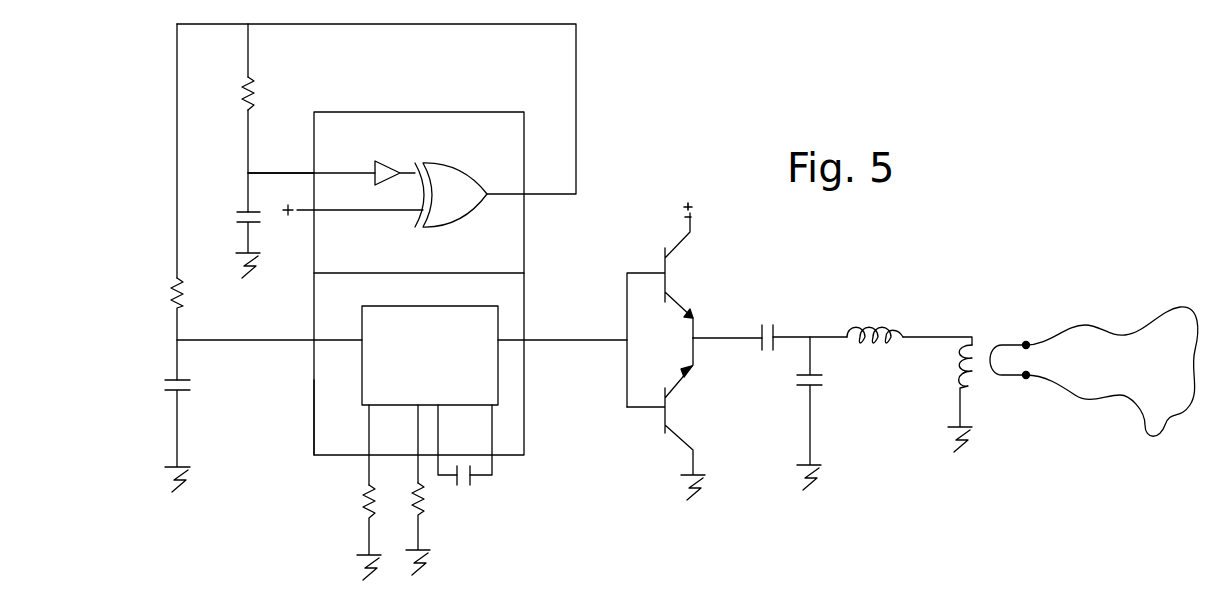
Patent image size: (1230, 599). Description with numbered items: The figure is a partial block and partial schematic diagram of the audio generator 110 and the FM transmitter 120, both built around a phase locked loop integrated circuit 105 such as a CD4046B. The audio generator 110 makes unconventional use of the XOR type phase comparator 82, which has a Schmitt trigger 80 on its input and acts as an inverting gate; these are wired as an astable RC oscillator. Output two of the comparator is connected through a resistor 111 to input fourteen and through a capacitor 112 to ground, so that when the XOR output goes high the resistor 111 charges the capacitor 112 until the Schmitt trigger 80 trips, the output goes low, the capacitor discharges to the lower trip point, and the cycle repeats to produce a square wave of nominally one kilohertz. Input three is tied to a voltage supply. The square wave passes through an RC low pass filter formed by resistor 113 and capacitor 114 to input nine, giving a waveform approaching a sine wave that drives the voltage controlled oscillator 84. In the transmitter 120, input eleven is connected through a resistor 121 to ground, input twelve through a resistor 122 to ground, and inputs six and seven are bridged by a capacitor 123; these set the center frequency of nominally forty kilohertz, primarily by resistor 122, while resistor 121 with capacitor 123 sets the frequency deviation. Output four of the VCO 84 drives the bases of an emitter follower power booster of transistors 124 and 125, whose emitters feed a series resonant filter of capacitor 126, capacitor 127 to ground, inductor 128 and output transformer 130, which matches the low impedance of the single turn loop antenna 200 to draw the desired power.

The Schmitt trigger 80 is at (390, 163).
The phase comparator 82 is at (456, 170).
The voltage controlled oscillator 84 is at (420, 306).
The integrated circuit 105 is at (374, 112).
The audio generator 110 is at (298, 162).
The resistor 111 is at (258, 90).
The capacitor 112 is at (244, 210).
The resistor 113 is at (190, 290).
The capacitor 114 is at (190, 380).
The FM transmitter 120 is at (314, 422).
The resistor 121 is at (369, 502).
The resistor 122 is at (422, 500).
The capacitor 123 is at (471, 480).
The transistor 124 is at (674, 284).
The transistor 125 is at (674, 421).
The capacitor 126 is at (762, 326).
The capacitor 127 is at (822, 386).
The inductor 128 is at (866, 330).
The output transformer 130 is at (980, 352).
The loop antenna 200 is at (1152, 318).